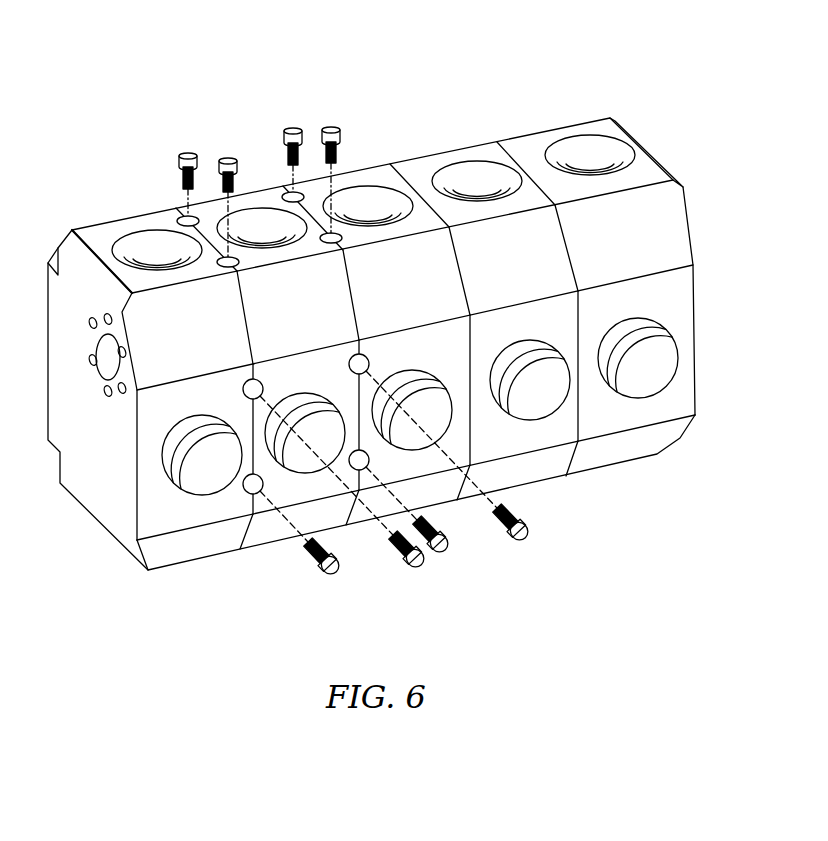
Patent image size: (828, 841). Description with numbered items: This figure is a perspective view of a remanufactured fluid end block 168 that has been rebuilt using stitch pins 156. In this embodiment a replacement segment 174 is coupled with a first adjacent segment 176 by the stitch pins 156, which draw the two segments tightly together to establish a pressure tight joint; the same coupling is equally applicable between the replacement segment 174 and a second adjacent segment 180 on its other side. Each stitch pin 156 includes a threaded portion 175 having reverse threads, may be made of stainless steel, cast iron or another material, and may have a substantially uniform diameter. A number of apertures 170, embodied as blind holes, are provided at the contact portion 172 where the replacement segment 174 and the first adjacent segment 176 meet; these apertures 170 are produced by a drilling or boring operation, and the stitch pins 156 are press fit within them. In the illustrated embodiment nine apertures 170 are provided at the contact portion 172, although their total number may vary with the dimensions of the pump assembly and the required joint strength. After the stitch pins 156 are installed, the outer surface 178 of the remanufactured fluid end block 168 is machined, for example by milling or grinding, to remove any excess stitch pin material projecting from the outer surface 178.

The remanufactured fluid end block 168 is at (549, 68).
The stitch pins 156 is at (188, 151).
The threaded portion 175 is at (195, 178).
The apertures 170 is at (180, 213).
The contact portion 172 is at (243, 531).
The replacement segment 174 is at (267, 200).
The first adjacent segment 176 is at (109, 231).
The outer surface 178 is at (636, 414).
The second adjacent segment 180 is at (390, 169).